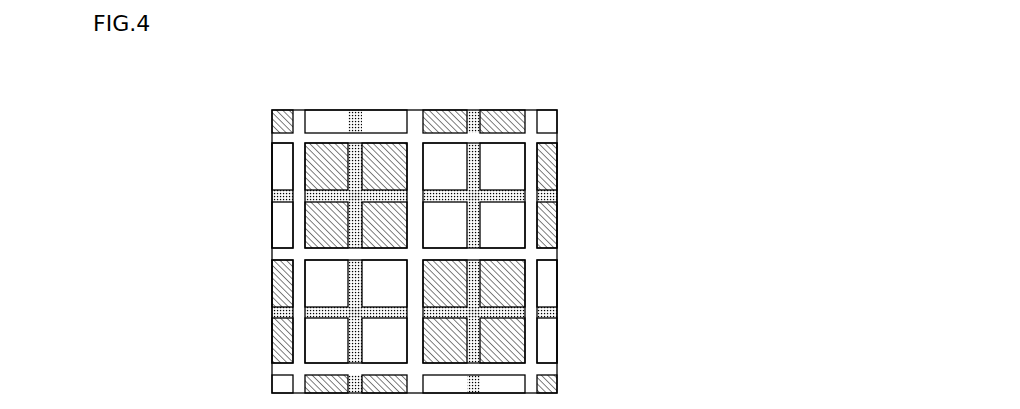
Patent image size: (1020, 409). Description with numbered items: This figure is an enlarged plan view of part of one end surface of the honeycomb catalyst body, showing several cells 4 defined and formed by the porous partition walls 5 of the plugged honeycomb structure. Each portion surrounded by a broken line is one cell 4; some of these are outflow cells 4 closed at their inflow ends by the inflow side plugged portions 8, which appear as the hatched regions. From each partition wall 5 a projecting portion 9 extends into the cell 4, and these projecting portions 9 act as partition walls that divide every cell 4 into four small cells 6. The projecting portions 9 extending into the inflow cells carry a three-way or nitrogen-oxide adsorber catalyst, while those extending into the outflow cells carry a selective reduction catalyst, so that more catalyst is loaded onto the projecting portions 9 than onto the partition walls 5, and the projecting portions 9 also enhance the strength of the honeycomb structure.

The cell 4 is at (508, 225).
The partition wall 5 is at (300, 288).
The small cell 6 is at (445, 163).
The plugged portion 8 is at (317, 173).
The projecting portion 9 is at (333, 195).